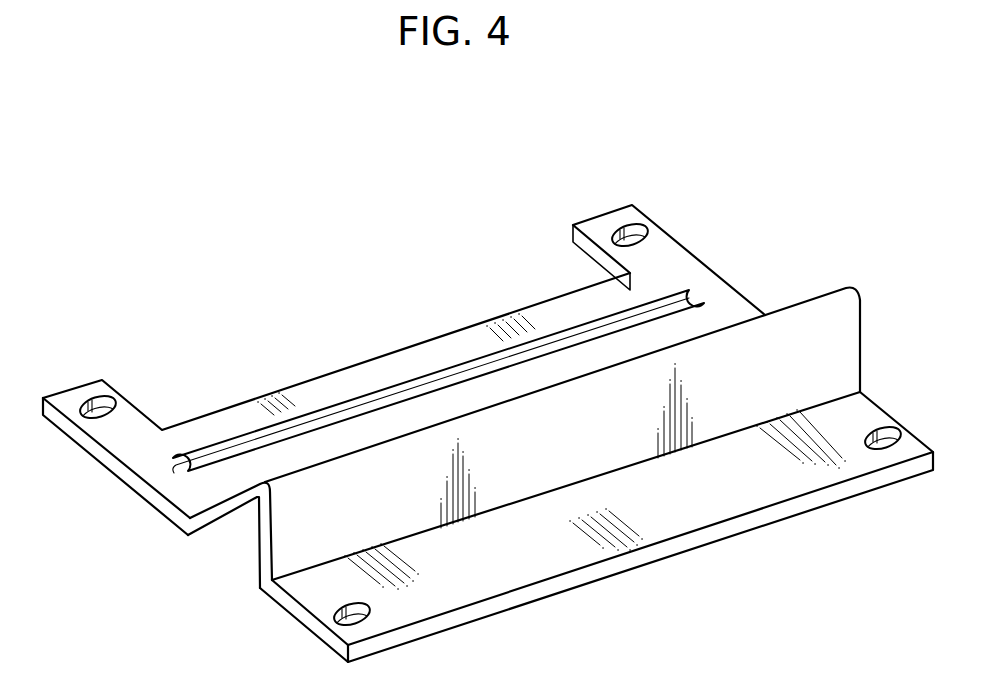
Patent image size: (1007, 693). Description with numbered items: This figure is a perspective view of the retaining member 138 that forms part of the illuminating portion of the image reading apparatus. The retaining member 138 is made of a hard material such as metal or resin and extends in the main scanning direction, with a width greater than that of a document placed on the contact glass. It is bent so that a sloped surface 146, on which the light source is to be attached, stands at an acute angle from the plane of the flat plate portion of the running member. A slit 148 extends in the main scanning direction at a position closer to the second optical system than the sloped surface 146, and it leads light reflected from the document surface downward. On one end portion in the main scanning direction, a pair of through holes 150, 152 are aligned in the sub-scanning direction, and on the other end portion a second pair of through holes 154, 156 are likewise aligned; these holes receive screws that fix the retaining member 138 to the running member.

The retaining member 138 is at (712, 271).
The sloped surface 146 is at (238, 489).
The slit 148 is at (397, 390).
The through hole 150 is at (92, 398).
The through hole 152 is at (333, 612).
The through hole 154 is at (627, 228).
The through hole 156 is at (878, 430).